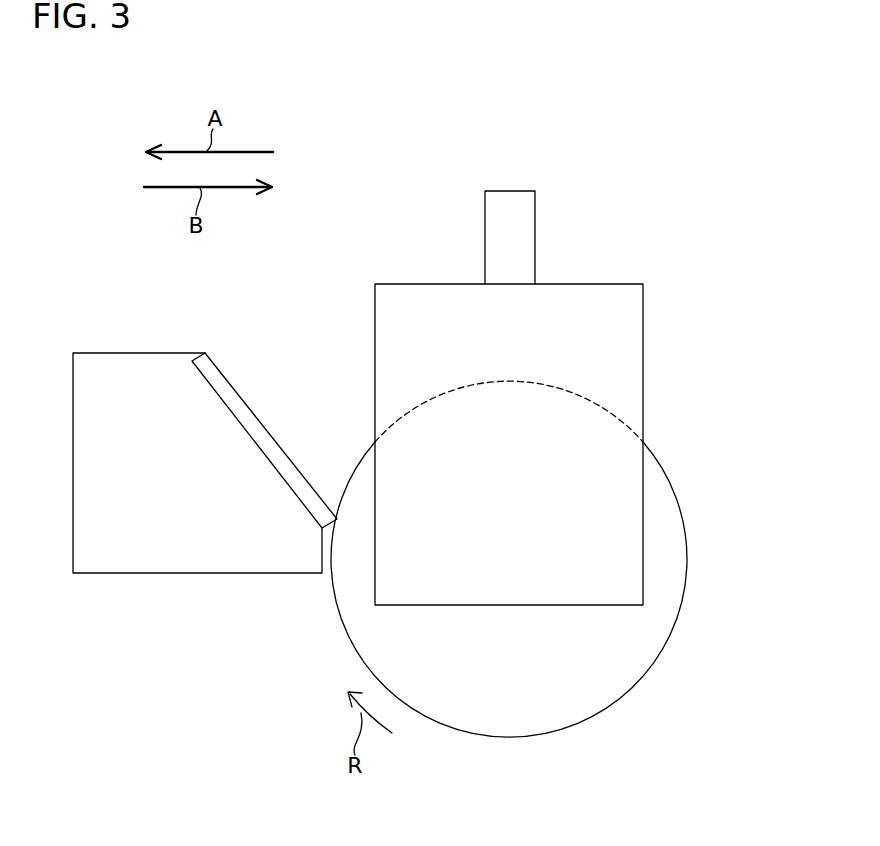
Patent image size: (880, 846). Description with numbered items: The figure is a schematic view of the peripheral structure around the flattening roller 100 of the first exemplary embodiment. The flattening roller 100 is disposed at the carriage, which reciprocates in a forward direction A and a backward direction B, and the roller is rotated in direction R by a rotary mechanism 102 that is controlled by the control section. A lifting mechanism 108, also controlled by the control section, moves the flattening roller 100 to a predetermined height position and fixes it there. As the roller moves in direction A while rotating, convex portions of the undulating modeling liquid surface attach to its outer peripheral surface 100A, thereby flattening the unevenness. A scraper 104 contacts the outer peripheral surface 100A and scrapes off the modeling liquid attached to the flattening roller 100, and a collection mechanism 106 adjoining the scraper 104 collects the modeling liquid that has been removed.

The flattening roller 100 is at (610, 693).
The outer peripheral surface 100A is at (655, 660).
The rotary mechanism 102 is at (644, 341).
The scraper 104 is at (223, 388).
The collection mechanism 106 is at (193, 564).
The lifting mechanism 108 is at (537, 232).